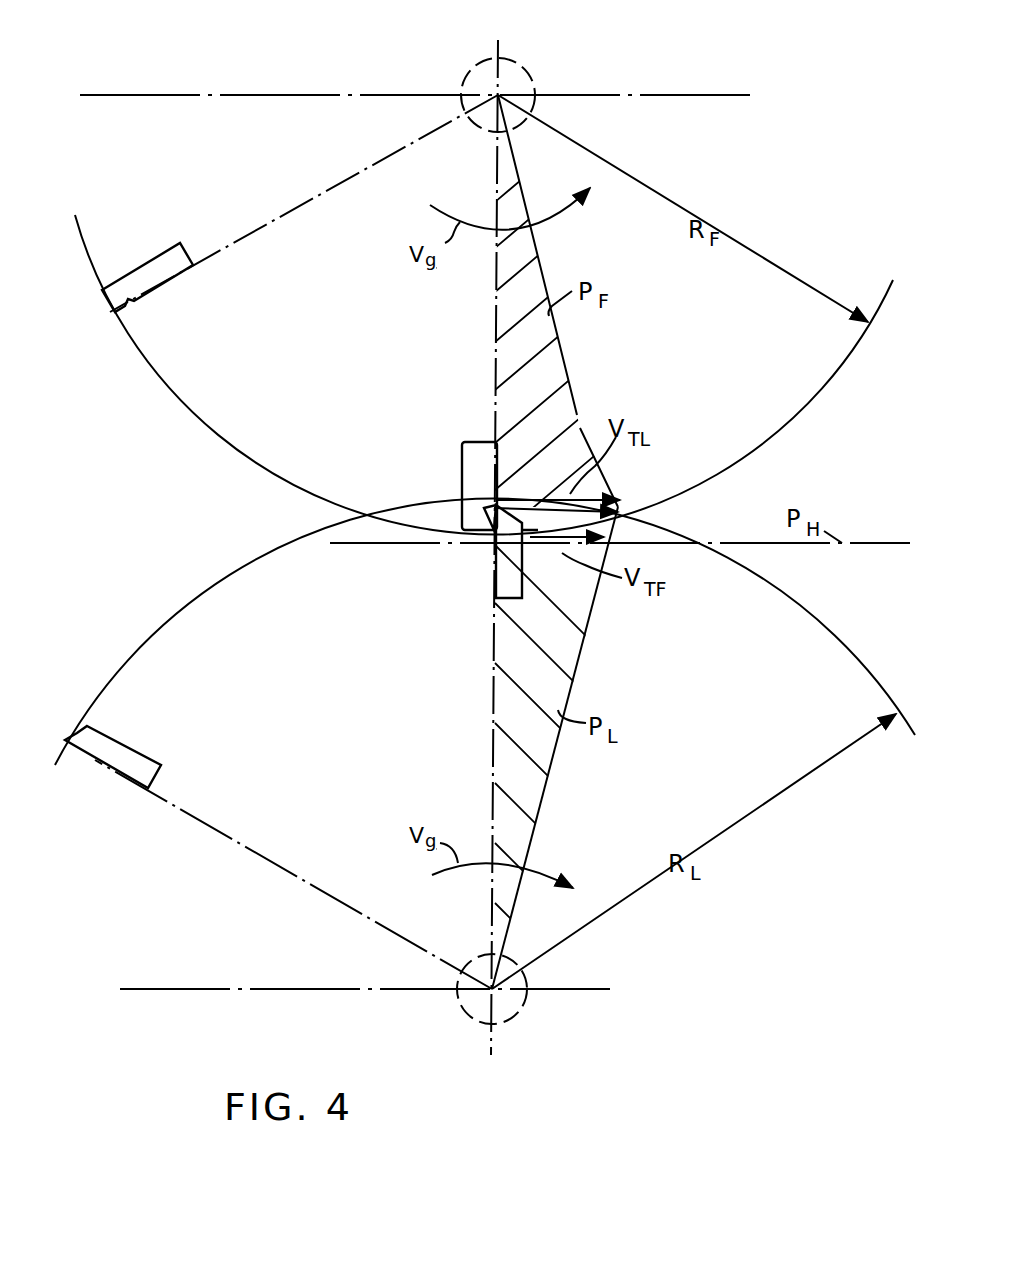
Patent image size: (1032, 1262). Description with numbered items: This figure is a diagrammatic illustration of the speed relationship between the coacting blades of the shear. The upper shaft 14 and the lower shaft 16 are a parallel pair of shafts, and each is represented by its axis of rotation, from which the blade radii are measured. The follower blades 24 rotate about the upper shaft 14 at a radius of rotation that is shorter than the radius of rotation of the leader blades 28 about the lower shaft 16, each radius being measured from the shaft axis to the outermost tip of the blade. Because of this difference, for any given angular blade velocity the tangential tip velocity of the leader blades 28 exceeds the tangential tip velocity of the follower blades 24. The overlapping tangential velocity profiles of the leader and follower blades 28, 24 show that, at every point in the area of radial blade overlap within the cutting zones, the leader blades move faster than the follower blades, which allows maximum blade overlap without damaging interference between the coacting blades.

The upper shaft 14 is at (514, 78).
The lower shaft 16 is at (508, 1010).
The follower blade 24 is at (474, 456).
The leader blade 28 is at (502, 578).